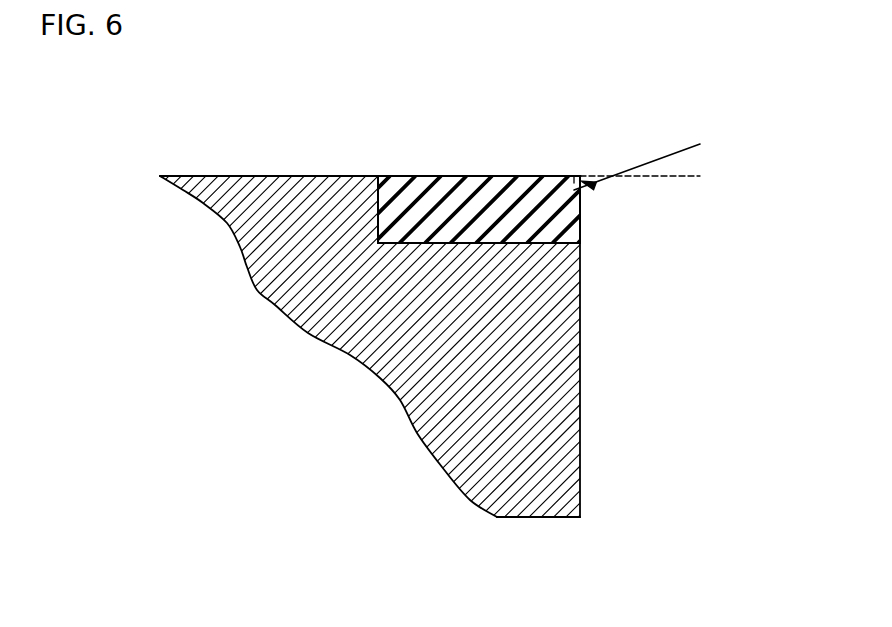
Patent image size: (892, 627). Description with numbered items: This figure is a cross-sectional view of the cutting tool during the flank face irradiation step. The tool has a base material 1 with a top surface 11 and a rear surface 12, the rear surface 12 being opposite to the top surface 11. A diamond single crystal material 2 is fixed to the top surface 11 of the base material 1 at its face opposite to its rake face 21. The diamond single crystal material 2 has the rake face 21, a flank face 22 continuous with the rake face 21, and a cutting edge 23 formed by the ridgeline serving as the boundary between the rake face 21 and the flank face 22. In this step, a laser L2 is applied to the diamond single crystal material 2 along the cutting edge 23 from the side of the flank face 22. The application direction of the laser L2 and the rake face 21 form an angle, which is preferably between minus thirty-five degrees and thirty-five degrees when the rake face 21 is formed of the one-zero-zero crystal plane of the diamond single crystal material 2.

The base material 1 is at (600, 396).
The top surface 11 is at (320, 176).
The rear surface 12 is at (548, 521).
The diamond single crystal material 2 is at (417, 197).
The rake face 21 is at (470, 176).
The flank face 22 is at (581, 225).
The cutting edge 23 is at (582, 176).
The laser L2 is at (666, 156).